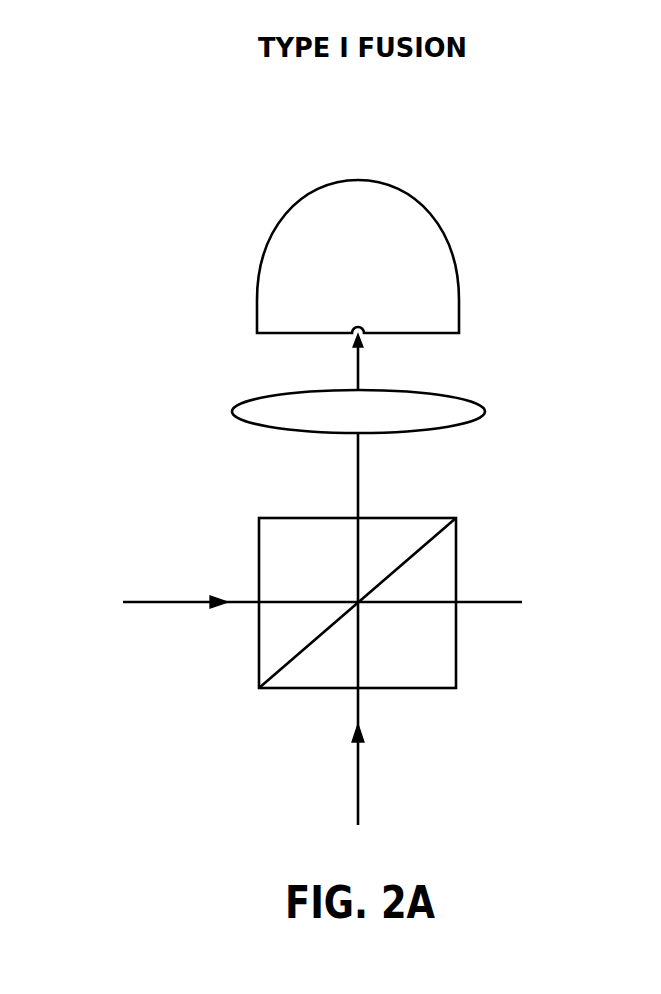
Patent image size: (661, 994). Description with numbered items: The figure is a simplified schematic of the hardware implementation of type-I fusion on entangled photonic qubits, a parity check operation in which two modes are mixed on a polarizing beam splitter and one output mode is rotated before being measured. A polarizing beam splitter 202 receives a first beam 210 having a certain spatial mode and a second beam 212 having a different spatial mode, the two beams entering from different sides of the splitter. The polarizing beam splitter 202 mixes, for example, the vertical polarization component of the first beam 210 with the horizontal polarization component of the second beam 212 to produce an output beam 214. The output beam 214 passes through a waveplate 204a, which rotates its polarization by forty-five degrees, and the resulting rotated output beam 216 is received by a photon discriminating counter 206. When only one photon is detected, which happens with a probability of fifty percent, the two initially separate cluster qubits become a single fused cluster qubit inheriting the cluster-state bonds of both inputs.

The polarizing beam splitter 202 is at (456, 652).
The waveplate 204a is at (461, 398).
The photon discriminating counter 206 is at (412, 201).
The first beam 210 is at (182, 602).
The second beam 212 is at (359, 777).
The output beam 214 is at (359, 477).
The rotated output beam 216 is at (359, 372).